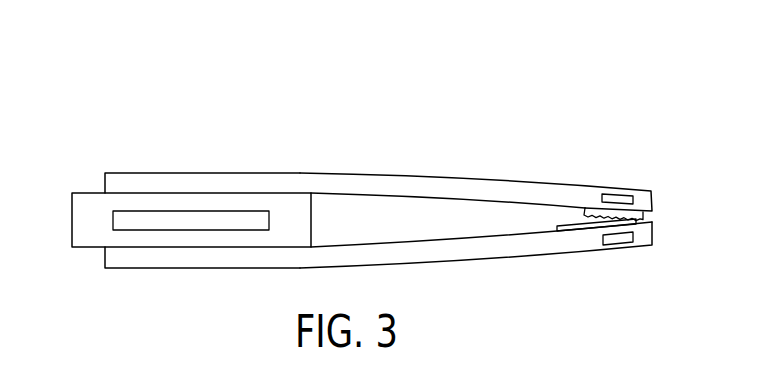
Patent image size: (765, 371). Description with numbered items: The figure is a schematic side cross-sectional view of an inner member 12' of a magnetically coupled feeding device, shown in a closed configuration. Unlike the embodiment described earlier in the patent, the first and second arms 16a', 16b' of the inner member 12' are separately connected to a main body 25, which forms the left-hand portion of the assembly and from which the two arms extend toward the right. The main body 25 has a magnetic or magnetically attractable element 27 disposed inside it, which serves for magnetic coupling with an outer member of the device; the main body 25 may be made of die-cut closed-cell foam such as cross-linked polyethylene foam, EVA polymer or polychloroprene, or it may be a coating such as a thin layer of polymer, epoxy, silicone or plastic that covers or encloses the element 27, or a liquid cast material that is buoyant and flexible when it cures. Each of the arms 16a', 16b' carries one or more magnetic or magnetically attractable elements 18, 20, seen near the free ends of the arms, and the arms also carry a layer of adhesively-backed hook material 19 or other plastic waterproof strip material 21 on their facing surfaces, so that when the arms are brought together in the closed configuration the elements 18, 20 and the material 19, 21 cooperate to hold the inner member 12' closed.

The inner member 12' is at (371, 164).
The first arm 16a' is at (510, 177).
The second arm 16b' is at (510, 252).
The magnetic or magnetically attractable element 18 is at (614, 198).
The layer of adhesively-backed hook material 19 is at (594, 208).
The magnetic or magnetically attractable element 20 is at (620, 246).
The plastic waterproof strip material 21 is at (557, 229).
The main body 25 is at (80, 210).
The magnetic or magnetically attractable element 27 is at (123, 218).